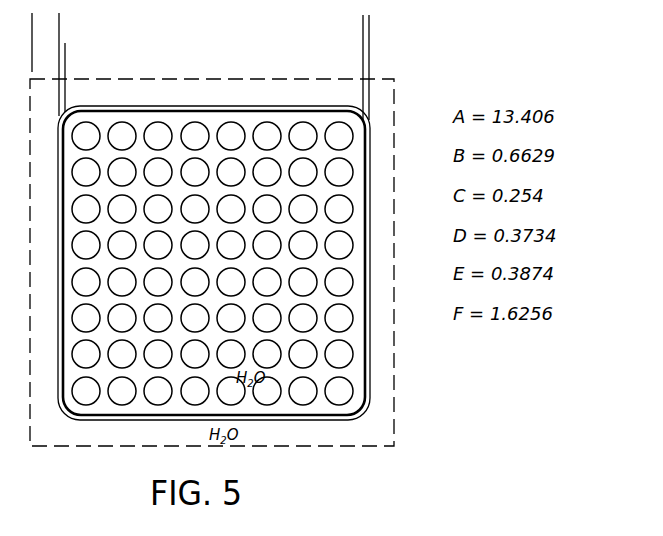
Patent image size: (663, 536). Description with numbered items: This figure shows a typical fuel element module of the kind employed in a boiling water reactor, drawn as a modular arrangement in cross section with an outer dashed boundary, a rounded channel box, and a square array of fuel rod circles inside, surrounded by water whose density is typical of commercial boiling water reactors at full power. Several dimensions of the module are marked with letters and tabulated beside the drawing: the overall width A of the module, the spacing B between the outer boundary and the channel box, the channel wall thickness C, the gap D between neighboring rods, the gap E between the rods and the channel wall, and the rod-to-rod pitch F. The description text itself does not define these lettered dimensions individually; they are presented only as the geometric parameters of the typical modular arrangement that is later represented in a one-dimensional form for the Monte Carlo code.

The channel box inner width dimension A is at (65, 58).
The channel box wall and gap dimension B is at (88, 30).
The channel box wall thickness dimension C is at (389, 32).
The rod-to-rod gap dimension D is at (150, 227).
The rod-to-wall gap dimension E is at (103, 90).
The rod pitch dimension F is at (138, 430).